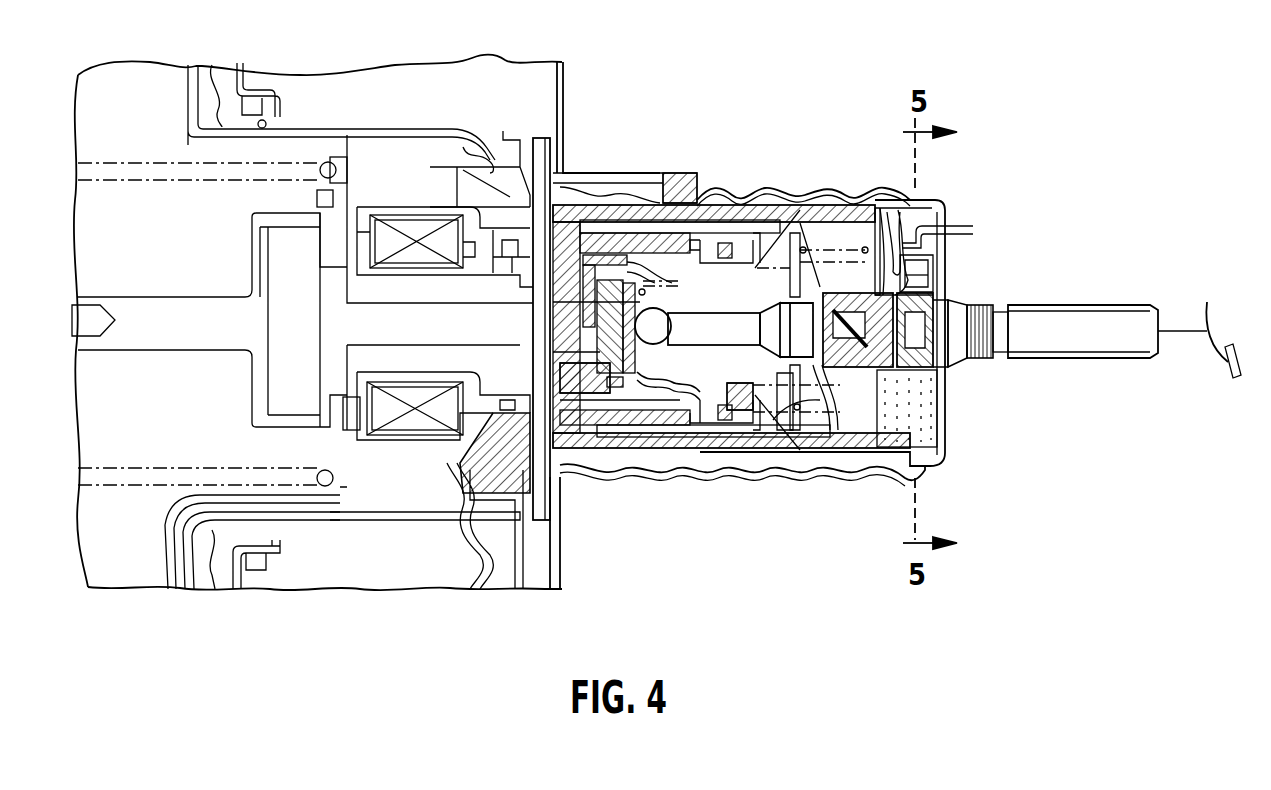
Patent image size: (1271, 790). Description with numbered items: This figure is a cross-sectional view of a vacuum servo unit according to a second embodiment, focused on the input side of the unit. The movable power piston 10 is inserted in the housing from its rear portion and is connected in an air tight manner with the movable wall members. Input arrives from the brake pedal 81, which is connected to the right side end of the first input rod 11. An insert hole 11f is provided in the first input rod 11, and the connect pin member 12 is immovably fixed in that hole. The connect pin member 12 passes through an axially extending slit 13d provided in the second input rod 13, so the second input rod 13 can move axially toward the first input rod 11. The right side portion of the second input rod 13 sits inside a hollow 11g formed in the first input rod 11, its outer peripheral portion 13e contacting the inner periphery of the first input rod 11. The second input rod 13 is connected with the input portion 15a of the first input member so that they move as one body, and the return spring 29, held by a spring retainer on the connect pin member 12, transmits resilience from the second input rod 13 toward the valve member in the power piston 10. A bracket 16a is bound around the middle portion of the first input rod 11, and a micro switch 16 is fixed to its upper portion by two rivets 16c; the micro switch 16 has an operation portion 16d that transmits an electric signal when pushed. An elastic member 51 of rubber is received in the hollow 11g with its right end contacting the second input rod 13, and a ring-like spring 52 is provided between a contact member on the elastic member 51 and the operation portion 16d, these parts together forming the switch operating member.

The power piston 10 is at (718, 202).
The first input rod 11 is at (1103, 338).
The insert hole 11f is at (893, 425).
The hollow 11g is at (790, 255).
The connect pin member 12 is at (848, 225).
The second input rod 13 is at (696, 350).
The slit 13d is at (712, 332).
The outer peripheral portion 13e is at (863, 363).
The input portion 15a is at (640, 385).
The micro switch 16 is at (927, 278).
The bracket 16a is at (884, 295).
The rivets 16c is at (957, 228).
The operation portion 16d is at (927, 278).
The return spring 29 is at (806, 444).
The elastic member 51 is at (940, 358).
The spring 52 is at (887, 293).
The brake pedal 81 is at (1207, 312).